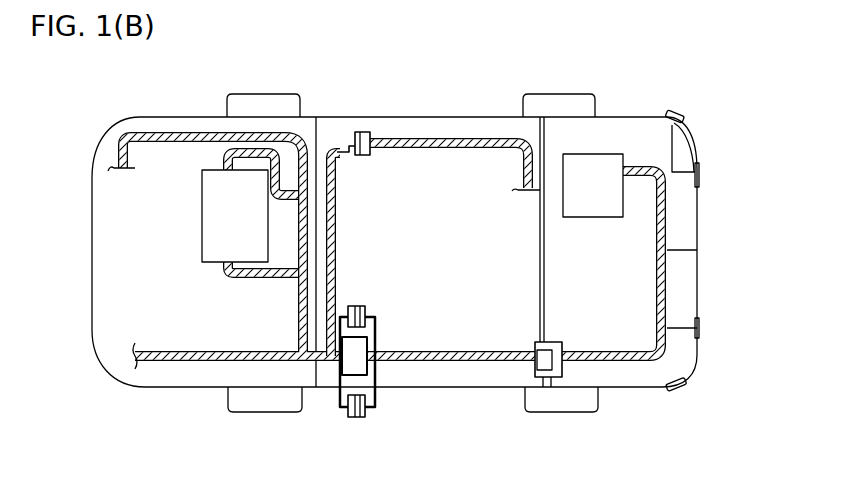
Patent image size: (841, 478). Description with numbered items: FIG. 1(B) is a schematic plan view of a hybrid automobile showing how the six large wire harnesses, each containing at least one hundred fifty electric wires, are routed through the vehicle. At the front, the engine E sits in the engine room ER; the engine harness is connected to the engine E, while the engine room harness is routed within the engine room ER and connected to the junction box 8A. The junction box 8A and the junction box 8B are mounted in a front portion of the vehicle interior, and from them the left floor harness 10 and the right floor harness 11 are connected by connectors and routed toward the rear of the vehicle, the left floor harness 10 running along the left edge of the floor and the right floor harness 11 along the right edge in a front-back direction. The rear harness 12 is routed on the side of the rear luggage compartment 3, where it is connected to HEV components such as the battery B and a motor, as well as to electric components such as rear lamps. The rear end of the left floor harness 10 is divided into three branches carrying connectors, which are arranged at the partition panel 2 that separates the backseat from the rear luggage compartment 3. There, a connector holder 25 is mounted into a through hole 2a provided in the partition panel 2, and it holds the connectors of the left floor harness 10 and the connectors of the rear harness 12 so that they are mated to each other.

The engine E is at (217, 198).
The engine room ER is at (140, 303).
The junction box 8A is at (358, 365).
The junction box 8B is at (368, 132).
The right floor harness 11 is at (447, 140).
The left floor harness 10 is at (430, 363).
The rear harness 12 is at (667, 217).
The partition panel 2 is at (545, 140).
The through hole 2a is at (540, 342).
The battery B is at (598, 168).
The rear luggage compartment 3 is at (610, 260).
The connector holder 25 is at (557, 345).